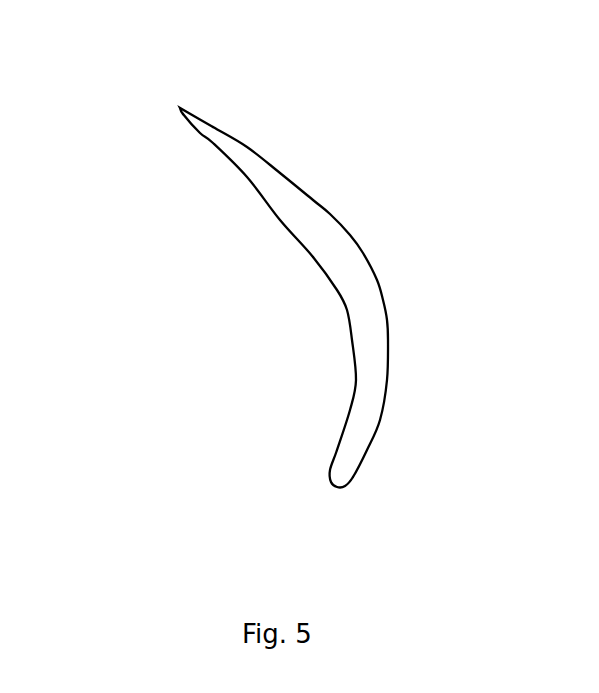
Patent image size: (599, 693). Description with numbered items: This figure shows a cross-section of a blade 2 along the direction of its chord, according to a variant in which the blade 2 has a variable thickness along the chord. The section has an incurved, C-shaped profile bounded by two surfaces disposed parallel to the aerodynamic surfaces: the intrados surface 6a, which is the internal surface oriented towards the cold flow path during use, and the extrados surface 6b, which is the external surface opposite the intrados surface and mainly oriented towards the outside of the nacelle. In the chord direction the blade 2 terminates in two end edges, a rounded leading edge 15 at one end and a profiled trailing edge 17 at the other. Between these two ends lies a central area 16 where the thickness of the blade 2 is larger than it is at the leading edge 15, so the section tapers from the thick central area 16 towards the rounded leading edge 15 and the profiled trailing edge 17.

The blade 2 is at (269, 306).
The intrados surface 6a is at (241, 198).
The extrados surface 6b is at (385, 258).
The leading edge 15 is at (304, 467).
The central area 16 is at (315, 304).
The trailing edge 17 is at (154, 107).